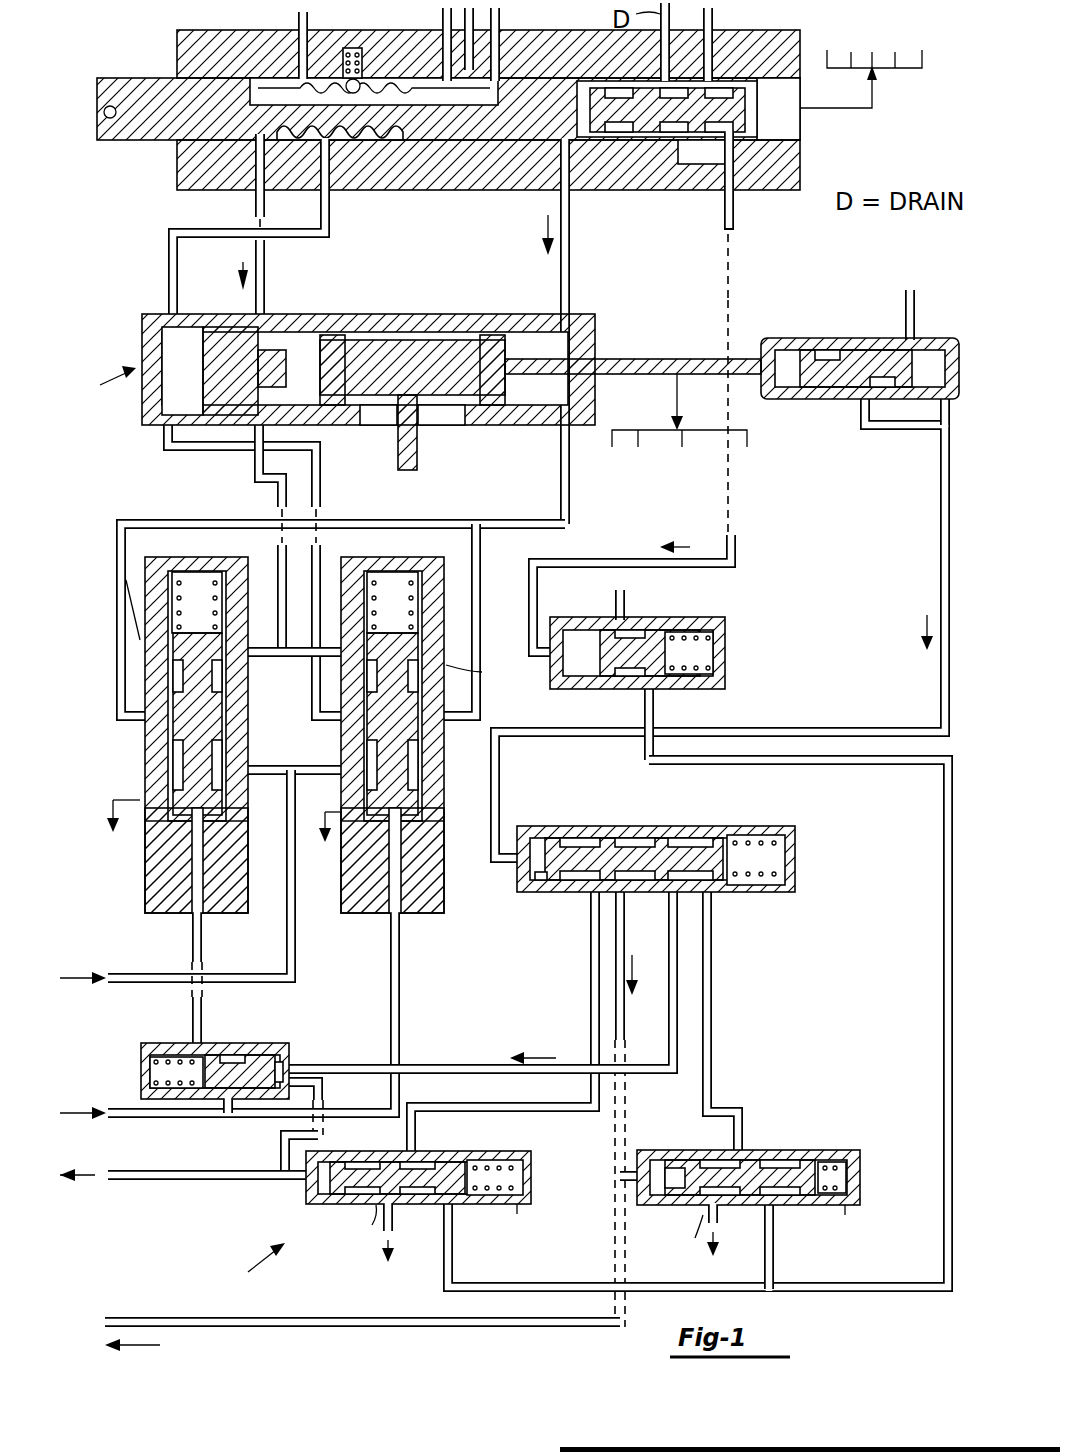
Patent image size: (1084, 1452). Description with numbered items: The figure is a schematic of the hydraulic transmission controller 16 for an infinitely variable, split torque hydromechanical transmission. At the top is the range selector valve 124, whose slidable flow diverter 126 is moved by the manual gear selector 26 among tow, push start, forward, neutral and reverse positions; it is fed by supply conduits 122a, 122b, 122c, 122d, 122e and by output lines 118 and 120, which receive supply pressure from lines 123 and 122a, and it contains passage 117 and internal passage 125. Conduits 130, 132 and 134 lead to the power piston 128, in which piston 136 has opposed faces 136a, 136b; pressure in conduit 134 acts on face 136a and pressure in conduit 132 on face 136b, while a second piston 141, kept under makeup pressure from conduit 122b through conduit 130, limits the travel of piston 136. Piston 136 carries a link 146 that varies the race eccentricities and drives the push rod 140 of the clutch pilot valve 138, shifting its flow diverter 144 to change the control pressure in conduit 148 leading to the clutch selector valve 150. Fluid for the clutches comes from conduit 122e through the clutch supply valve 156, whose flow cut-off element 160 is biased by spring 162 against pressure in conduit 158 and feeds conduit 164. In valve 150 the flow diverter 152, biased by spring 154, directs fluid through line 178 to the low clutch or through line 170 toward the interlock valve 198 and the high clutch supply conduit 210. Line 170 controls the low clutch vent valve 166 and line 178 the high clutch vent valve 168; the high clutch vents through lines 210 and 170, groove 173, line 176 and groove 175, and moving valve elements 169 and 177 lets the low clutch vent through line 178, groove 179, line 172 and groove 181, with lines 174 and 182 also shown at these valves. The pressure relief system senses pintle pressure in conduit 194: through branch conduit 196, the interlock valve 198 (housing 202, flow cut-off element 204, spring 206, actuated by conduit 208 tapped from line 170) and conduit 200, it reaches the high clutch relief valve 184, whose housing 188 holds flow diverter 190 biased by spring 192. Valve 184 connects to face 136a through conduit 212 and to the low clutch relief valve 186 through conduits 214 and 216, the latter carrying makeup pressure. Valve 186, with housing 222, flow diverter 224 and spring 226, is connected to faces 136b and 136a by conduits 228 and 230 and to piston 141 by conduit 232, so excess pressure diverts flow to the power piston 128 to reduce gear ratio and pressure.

The controller 16 is at (178, 826).
The manual gear selector 26 is at (880, 112).
The passage 117 is at (470, 150).
The output line 118 is at (348, 40).
The output line 120 is at (500, 16).
The hydraulic conduit 122a is at (445, 20).
The conduit 122b is at (298, 28).
The conduit 122c is at (905, 300).
The supply conduit 122d is at (714, 18).
The supply conduit 122e is at (628, 600).
The supply line 123 is at (298, 945).
The range selector valve 124 is at (431, 116).
The internal passage 125 is at (415, 145).
The flow diverter 126 is at (440, 154).
The power piston 128 is at (414, 373).
The hydraulic conduit 130 is at (335, 240).
The hydraulic conduit 132 is at (255, 210).
The hydraulic conduit 134 is at (571, 250).
The piston 136 is at (415, 337).
The face of piston 136a is at (505, 342).
The face of piston 136b is at (316, 340).
The clutch pilot valve 138 is at (859, 370).
The push rod 140 is at (618, 358).
The second piston 141 is at (215, 327).
The flow diverter 144 is at (830, 402).
The link 146 is at (418, 455).
The conduit 148 is at (940, 533).
The clutch selector valve 150 is at (689, 843).
The flow diverter 152 is at (572, 830).
The spring 154 is at (760, 835).
The clutch supply valve 156 is at (675, 638).
The hydraulic conduit 158 is at (733, 230).
The flow cut-off element 160 is at (590, 650).
The spring 162 is at (728, 668).
The conduit 164 is at (670, 712).
The low clutch vent valve 166 is at (414, 1190).
The high clutch vent valve 168 is at (752, 1176).
The valve element 169 is at (770, 1160).
The line 170 is at (680, 935).
The line 172 is at (585, 935).
The groove 173 is at (700, 835).
The line 174 is at (672, 768).
The groove 175 is at (735, 1158).
The line 176 is at (715, 1000).
The valve element 177 is at (330, 1200).
The line 178 is at (595, 990).
The groove 179 is at (560, 880).
The groove 181 is at (378, 1162).
The line 182 is at (778, 1250).
The high clutch relief valve 184 is at (190, 723).
The low clutch relief valve 186 is at (446, 905).
The housing 188 is at (140, 878).
The flow diverter 190 is at (218, 720).
The spring 192 is at (210, 572).
The conduit 194 is at (400, 995).
The branch conduit 196 is at (200, 1105).
The high clutch interlock valve 198 is at (225, 1072).
The conduit 200 is at (190, 948).
The housing 202 is at (290, 1050).
The flow cut-off element 204 is at (212, 1052).
The spring 206 is at (155, 1078).
The conduit 208 is at (300, 1090).
The conduit 210 is at (220, 1190).
The hydraulic conduit 212 is at (575, 495).
The conduit 214 is at (300, 660).
The conduit 216 is at (282, 762).
The housing 222 is at (410, 727).
The flow diverter 224 is at (400, 785).
The spring 226 is at (372, 580).
The hydraulic conduit 228 is at (250, 480).
The hydraulic conduit 230 is at (492, 592).
The conduit 232 is at (172, 450).